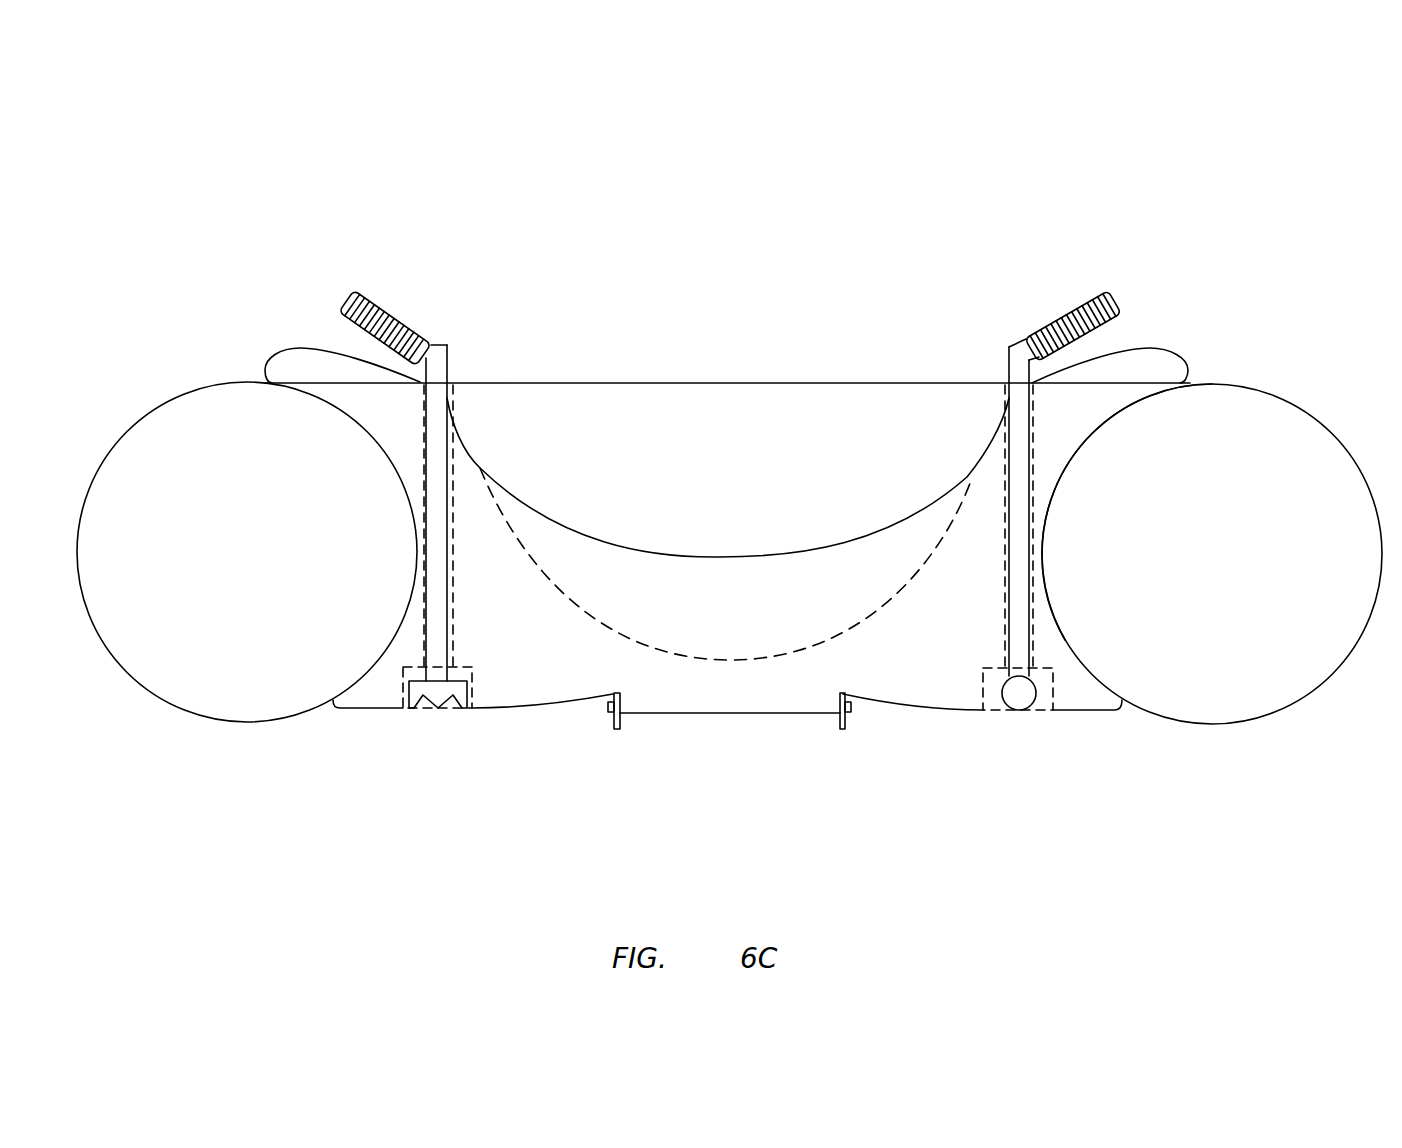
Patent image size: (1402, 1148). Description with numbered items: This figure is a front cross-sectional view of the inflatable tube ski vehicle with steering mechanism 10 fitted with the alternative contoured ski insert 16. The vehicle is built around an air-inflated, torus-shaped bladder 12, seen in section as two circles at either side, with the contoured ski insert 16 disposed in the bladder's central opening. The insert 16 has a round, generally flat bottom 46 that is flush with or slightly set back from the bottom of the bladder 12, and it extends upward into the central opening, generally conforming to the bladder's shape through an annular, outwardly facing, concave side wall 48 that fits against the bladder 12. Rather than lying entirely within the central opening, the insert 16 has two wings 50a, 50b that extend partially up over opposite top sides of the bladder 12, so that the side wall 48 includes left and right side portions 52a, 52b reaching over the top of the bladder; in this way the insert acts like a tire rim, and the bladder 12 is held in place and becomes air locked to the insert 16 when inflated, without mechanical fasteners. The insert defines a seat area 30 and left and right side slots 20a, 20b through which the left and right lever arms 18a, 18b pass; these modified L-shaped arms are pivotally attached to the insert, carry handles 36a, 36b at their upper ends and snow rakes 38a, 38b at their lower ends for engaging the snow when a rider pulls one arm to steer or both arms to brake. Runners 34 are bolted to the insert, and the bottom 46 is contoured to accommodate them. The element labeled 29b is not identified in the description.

The inflatable tube ski vehicle with steering mechanism 10 is at (245, 190).
The bladder 12 is at (1328, 665).
The contoured ski insert 16 is at (520, 698).
The left lever arm 18a is at (1017, 438).
The right lever arm 18b is at (440, 438).
The left side slot 20a is at (1060, 681).
The right side slot 20b is at (415, 672).
The cross member 29b is at (770, 393).
The seat area 30 is at (635, 640).
The runners 34 is at (610, 727).
The handle 36a is at (1082, 301).
The handle 36b is at (378, 298).
The snow rake 38a is at (1019, 700).
The snow rake 38b is at (437, 703).
The bottom 46 is at (768, 716).
The side wall 48 is at (1090, 517).
The wing 50a is at (1060, 405).
The wing 50b is at (395, 405).
The left side portion 52a is at (1052, 617).
The right side portion 52b is at (410, 514).